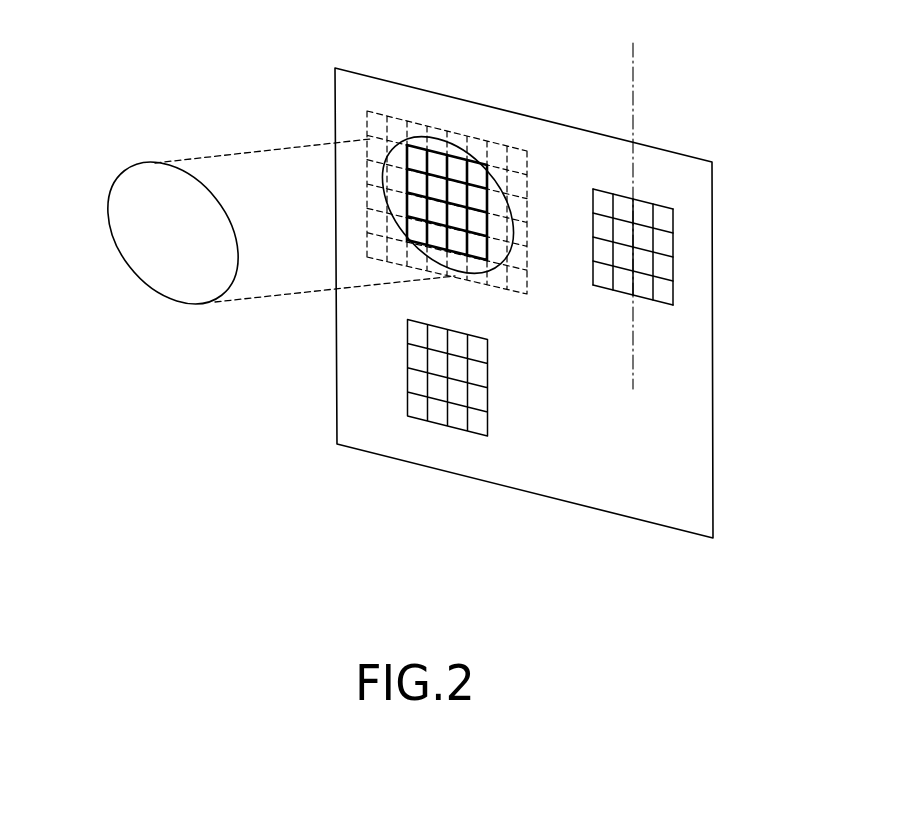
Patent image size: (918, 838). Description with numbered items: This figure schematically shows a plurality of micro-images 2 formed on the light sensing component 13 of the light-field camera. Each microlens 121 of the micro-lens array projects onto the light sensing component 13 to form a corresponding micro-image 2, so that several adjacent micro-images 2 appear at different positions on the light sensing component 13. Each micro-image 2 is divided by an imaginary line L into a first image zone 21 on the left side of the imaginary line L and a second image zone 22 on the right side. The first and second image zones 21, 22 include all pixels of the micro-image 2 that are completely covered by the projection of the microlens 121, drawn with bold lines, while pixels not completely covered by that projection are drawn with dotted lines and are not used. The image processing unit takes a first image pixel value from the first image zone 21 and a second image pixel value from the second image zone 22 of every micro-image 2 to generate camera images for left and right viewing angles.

The micro-image 2 is at (457, 157).
The light sensing component 13 is at (512, 112).
The first image zone 21 is at (619, 189).
The second image zone 22 is at (662, 197).
The microlens 121 is at (132, 183).
The imaginary line L is at (631, 198).